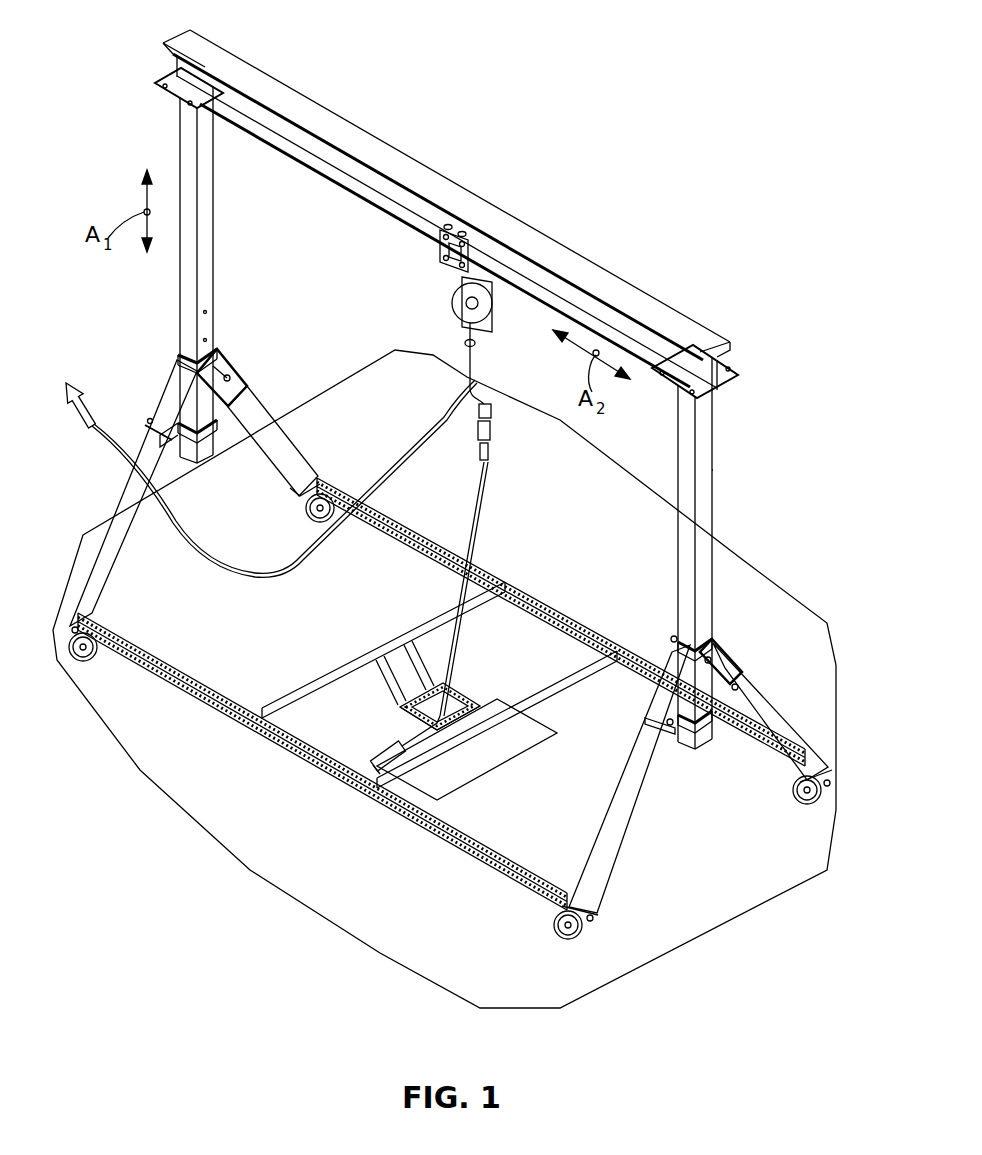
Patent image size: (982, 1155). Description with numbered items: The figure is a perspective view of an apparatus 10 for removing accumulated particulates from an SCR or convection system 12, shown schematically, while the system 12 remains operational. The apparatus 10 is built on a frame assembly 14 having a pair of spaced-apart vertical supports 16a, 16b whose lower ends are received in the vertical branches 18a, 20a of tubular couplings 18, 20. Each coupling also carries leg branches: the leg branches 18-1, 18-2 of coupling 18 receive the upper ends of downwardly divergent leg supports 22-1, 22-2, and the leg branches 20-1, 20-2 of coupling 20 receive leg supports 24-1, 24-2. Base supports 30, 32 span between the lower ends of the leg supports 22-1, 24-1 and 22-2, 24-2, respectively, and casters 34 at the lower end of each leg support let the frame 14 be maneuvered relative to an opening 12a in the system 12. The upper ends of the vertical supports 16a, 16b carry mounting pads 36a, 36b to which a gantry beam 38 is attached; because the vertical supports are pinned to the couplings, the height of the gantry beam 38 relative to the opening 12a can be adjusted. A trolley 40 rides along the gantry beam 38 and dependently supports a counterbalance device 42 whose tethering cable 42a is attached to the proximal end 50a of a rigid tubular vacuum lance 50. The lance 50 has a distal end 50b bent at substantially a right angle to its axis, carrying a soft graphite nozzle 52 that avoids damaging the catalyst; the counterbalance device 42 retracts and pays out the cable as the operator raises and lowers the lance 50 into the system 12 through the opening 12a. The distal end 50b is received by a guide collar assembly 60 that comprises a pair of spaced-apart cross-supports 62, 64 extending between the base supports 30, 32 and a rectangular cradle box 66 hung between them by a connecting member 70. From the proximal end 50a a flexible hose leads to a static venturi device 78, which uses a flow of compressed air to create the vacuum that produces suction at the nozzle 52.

The apparatus 10 is at (245, 940).
The SCR or convection system 12 is at (473, 912).
The opening 12a is at (478, 768).
The frame assembly 14 is at (718, 468).
The vertical support 16a is at (714, 550).
The vertical support 16b is at (206, 232).
The tubular coupling 18 is at (722, 638).
The leg branch 18-1 is at (742, 670).
The leg branch 18-2 is at (652, 706).
The vertical branch 18a is at (706, 750).
The tubular coupling 20 is at (174, 348).
The leg branch 20-1 is at (226, 372).
The leg branch 20-2 is at (206, 438).
The vertical branch 20a is at (218, 405).
The leg support 22-1 is at (798, 752).
The leg support 22-2 is at (624, 824).
The leg support 24-1 is at (304, 462).
The leg support 24-2 is at (108, 572).
The base support 30 is at (383, 525).
The base support 32 is at (205, 702).
The caster 34 is at (348, 496).
The mounting pad 36a is at (737, 368).
The mounting pad 36b is at (160, 87).
The gantry beam 38 is at (304, 102).
The trolley 40 is at (440, 246).
The counterbalance device 42 is at (462, 303).
The tethering cable 42a is at (474, 344).
The rigid tubular vacuum lance 50 is at (480, 527).
The proximal end 50a is at (492, 432).
The distal end 50b is at (398, 752).
The nozzle 52 is at (372, 760).
The guide collar assembly 60 is at (462, 690).
The cross-support 62 is at (578, 665).
The cross-support 64 is at (360, 672).
The cradle box 66 is at (468, 700).
The connecting member 70 is at (412, 652).
The static venturi device 78 is at (266, 461).